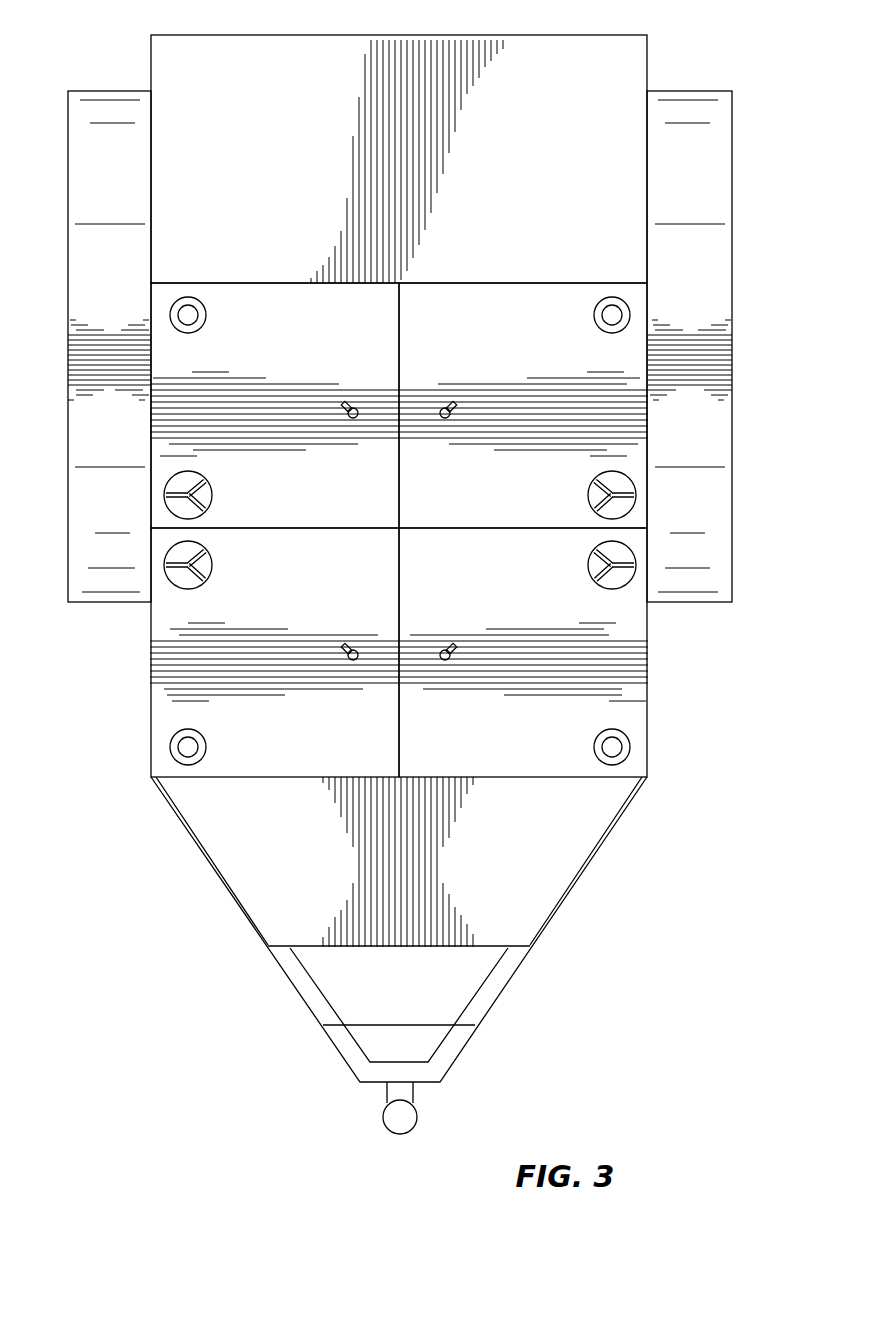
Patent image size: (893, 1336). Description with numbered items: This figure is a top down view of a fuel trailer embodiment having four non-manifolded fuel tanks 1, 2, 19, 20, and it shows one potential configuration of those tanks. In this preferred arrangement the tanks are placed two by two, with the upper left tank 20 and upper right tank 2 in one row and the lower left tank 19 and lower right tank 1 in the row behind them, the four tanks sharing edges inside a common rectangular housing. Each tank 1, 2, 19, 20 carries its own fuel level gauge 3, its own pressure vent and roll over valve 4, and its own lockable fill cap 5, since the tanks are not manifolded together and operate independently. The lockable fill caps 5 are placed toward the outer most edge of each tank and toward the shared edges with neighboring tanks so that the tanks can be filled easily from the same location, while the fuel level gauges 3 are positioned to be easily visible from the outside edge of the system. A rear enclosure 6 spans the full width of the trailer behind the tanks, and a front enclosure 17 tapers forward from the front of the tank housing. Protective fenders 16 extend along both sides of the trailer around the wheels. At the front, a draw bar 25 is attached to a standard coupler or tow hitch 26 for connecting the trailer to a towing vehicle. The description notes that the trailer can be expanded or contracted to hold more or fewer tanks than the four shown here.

The non-manifolded fuel tank 1 is at (635, 713).
The non-manifolded fuel tank 2 is at (610, 442).
The fuel level gauge 3 is at (180, 300).
The pressure vent and roll over valve 4 is at (350, 405).
The lockable fill cap 5 is at (212, 498).
The rear enclosure 6 is at (283, 50).
The protective fender 16 is at (102, 95).
The front enclosure 17 is at (230, 842).
The non-manifolded fuel tank 19 is at (170, 720).
The non-manifolded fuel tank 20 is at (167, 345).
The draw bar 25 is at (305, 978).
The coupler or tow hitch 26 is at (397, 1118).